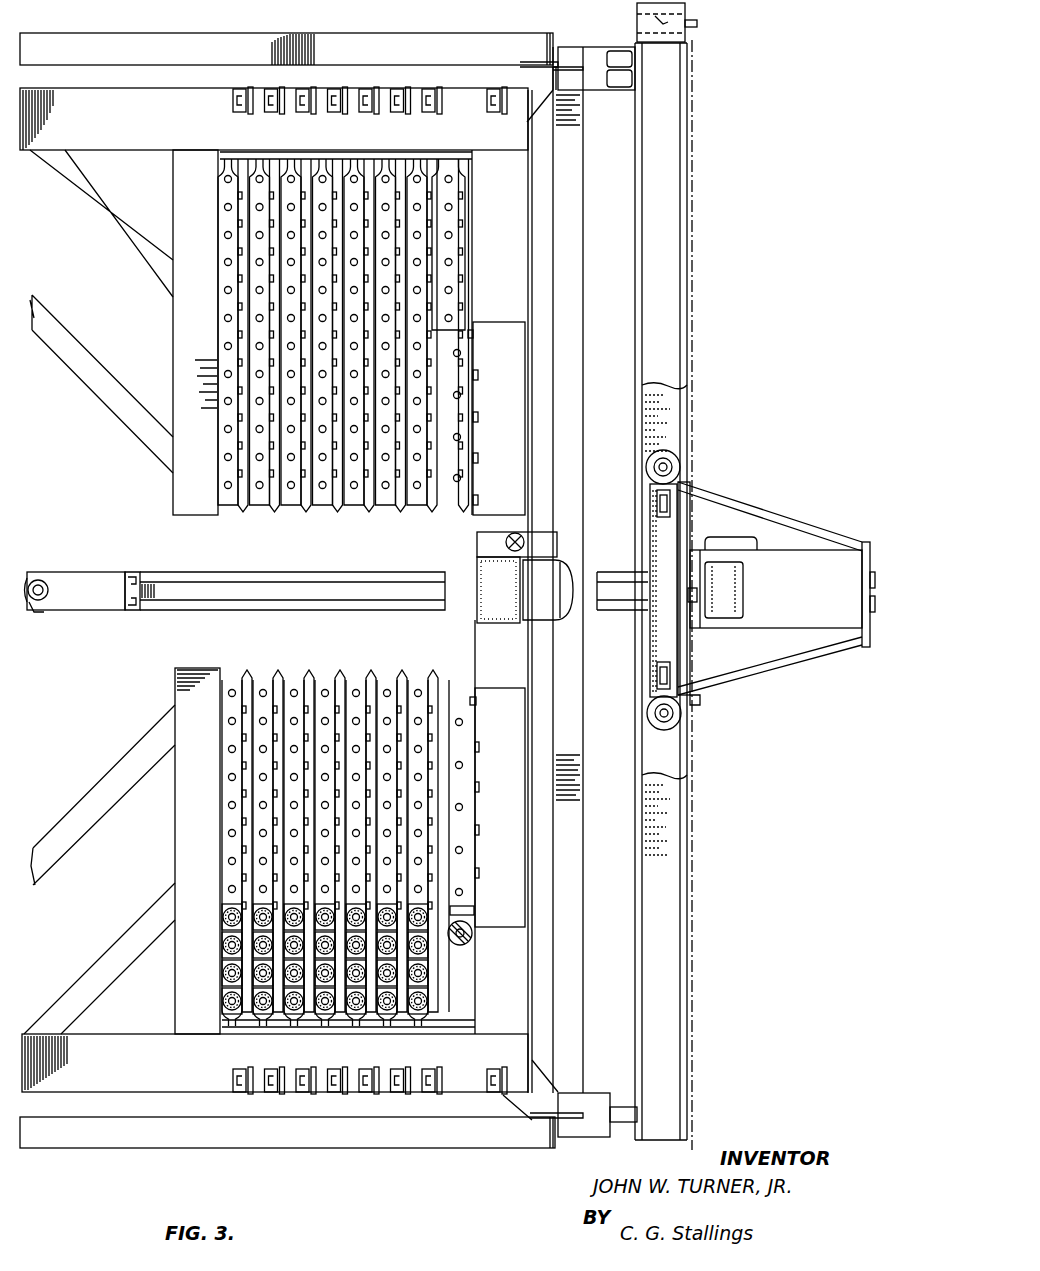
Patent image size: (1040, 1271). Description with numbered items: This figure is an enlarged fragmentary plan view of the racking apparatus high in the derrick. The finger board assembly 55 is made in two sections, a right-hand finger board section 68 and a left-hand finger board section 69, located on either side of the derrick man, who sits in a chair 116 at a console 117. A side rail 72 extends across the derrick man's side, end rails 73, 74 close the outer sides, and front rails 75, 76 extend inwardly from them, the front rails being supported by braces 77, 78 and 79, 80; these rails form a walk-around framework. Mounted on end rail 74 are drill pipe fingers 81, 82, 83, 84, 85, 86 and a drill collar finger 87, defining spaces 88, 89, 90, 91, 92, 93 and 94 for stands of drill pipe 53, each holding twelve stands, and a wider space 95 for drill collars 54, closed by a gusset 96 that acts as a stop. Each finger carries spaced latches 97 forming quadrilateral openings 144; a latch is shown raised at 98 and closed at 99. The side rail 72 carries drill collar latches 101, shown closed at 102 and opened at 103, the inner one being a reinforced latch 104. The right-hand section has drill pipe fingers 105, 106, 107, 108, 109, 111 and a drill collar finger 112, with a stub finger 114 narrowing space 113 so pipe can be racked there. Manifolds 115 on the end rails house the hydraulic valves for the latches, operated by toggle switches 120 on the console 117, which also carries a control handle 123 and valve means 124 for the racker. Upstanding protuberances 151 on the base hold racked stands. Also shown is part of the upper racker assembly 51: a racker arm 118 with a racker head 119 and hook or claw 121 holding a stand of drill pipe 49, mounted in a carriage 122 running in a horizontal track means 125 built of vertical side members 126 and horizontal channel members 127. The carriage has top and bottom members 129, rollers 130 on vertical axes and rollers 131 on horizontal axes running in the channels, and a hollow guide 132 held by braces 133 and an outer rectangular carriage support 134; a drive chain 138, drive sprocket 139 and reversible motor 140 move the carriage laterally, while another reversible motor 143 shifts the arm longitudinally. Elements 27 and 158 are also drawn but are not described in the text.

The lower angle bracket 27 is at (560, 1128).
The stand of drill pipe 49 is at (36, 608).
The upper racker assembly 51 is at (813, 560).
The stands of drill pipe 53 is at (222, 945).
The drill collars 54 is at (473, 938).
The finger board assembly 55 is at (595, 240).
The right-hand finger board section 68 is at (460, 143).
The left-hand finger board section 69 is at (200, 1058).
The side rail 72 is at (508, 591).
The end rail 73 is at (172, 102).
The end rail 74 is at (92, 1092).
The front rail 75 is at (182, 338).
The front rail 76 is at (190, 828).
The brace 77 is at (128, 246).
The brace 78 is at (90, 342).
The brace 79 is at (135, 757).
The brace 80 is at (112, 965).
The drill pipe finger 81 is at (247, 1020).
The drill pipe finger 82 is at (278, 1020).
The drill pipe finger 83 is at (309, 1020).
The drill pipe finger 84 is at (340, 1020).
The drill pipe finger 85 is at (371, 1020).
The drill pipe finger 86 is at (402, 1020).
The drill collar finger 87 is at (434, 1020).
The space 88 is at (232, 680).
The space 89 is at (263, 680).
The space 90 is at (294, 680).
The space 91 is at (326, 680).
The space 92 is at (356, 680).
The space 93 is at (387, 680).
The space 94 is at (418, 680).
The space 95 is at (459, 680).
The gusset 96 is at (466, 993).
The latches 97 is at (240, 875).
The opened latch 98 is at (244, 792).
The closed latch 99 is at (222, 1001).
The drill collar latches 101 is at (475, 910).
The closed drill collar latch 102 is at (462, 908).
The opened drill collar latch 103 is at (480, 790).
The reinforced drill collar latch 104 is at (475, 698).
The drill pipe finger 105 is at (243, 167).
The drill pipe finger 106 is at (274, 167).
The drill pipe finger 107 is at (306, 167).
The drill pipe finger 108 is at (337, 167).
The drill pipe finger 109 is at (369, 167).
The drill pipe finger 111 is at (400, 167).
The drill collar finger 112 is at (432, 167).
The space 113 is at (458, 500).
The stub finger 114 is at (467, 233).
The manifolds 115 is at (320, 94).
The chair 116 is at (565, 570).
The console 117 is at (477, 578).
The racker arm 118 is at (188, 580).
The racker head 119 is at (98, 578).
The toggle switches 120 is at (477, 612).
The hook or claw 121 is at (40, 580).
The carriage 122 is at (762, 500).
The control handle 123 is at (513, 532).
The valve means 124 is at (512, 636).
The horizontal track means 125 is at (692, 204).
The vertical side members 126 is at (702, 17).
The horizontal channel members 127 is at (688, 422).
The top and bottom carriage members 129 is at (665, 642).
The upper and lower rollers 130 is at (675, 470).
The rollers 131 is at (620, 482).
The hollow guide 132 is at (770, 640).
The braces 133 is at (722, 492).
The outer rectangular carriage support 134 is at (866, 650).
The drive chain 138 is at (700, 930).
The drive sprocket 139 is at (690, 600).
The reversible motor 140 is at (748, 585).
The reversible motor 143 is at (753, 538).
The quadrilateral opening 144 is at (222, 925).
The upstanding protuberances 151 is at (232, 720).
The upper slats 158 is at (262, 490).